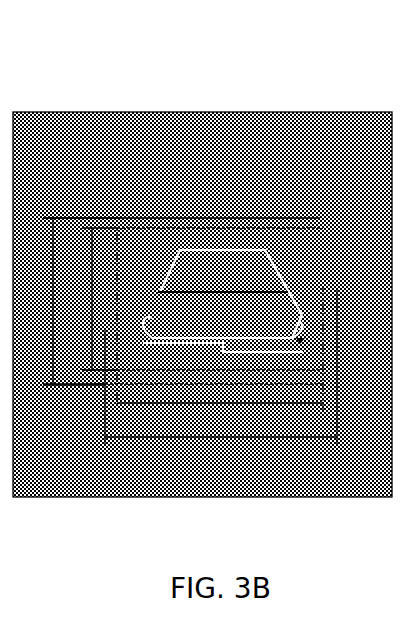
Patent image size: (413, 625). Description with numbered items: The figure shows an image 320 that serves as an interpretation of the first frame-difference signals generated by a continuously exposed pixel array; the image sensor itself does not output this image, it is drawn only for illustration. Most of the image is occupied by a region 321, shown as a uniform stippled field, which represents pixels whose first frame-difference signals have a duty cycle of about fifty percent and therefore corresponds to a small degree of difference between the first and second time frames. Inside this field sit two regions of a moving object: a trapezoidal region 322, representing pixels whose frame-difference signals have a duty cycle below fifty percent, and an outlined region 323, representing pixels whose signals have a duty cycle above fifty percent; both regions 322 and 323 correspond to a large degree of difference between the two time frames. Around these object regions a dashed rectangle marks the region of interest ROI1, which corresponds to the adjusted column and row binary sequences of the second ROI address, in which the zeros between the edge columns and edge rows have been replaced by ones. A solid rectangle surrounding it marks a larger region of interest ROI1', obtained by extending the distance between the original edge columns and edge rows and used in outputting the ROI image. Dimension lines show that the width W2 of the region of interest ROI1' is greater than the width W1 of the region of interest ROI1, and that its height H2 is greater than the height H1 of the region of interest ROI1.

The image 320 is at (48, 112).
The region 321 is at (171, 126).
The region 322 is at (160, 263).
The region 323 is at (313, 289).
The region of interest ROI1 is at (202, 216).
The larger region of interest ROI1' is at (194, 229).
The height of region of interest ROI1 H1 is at (89, 299).
The height of region of interest ROI1' H2 is at (71, 301).
The width of region of interest ROI1 W1 is at (220, 417).
The width of region of interest ROI1' W2 is at (221, 449).